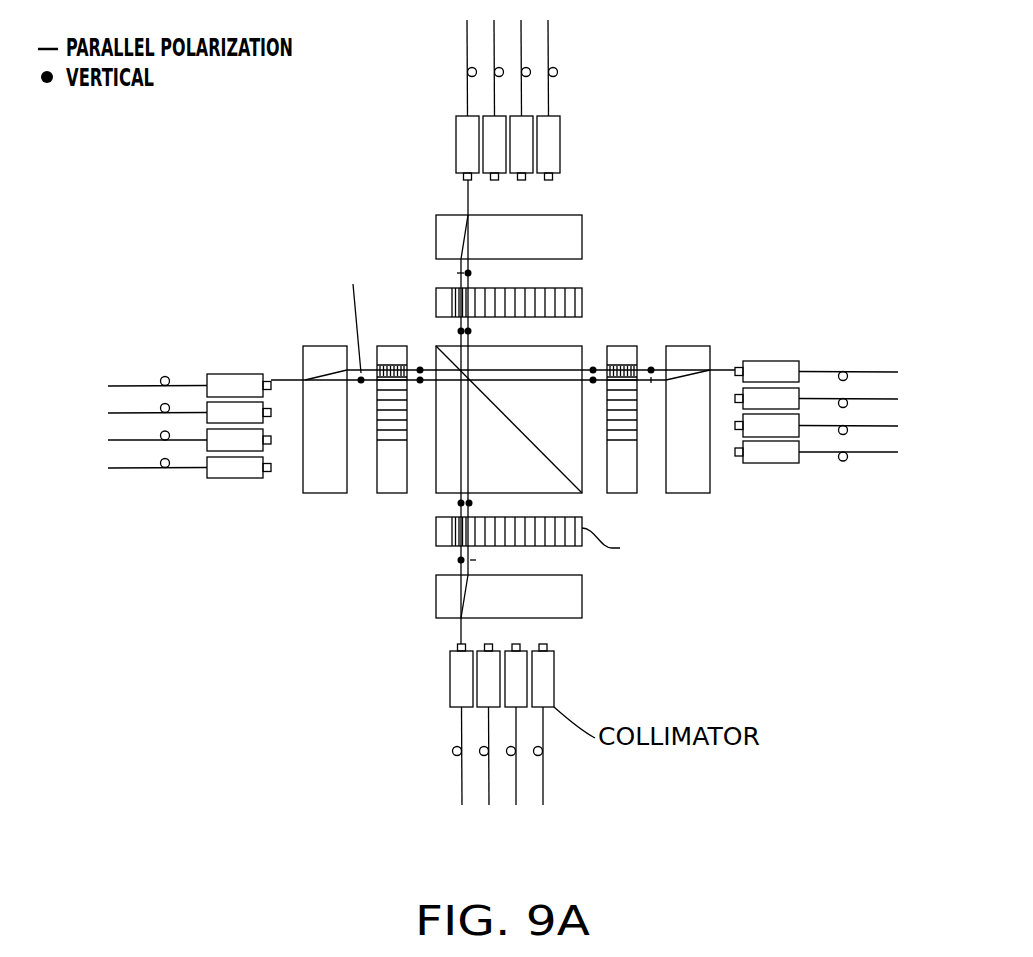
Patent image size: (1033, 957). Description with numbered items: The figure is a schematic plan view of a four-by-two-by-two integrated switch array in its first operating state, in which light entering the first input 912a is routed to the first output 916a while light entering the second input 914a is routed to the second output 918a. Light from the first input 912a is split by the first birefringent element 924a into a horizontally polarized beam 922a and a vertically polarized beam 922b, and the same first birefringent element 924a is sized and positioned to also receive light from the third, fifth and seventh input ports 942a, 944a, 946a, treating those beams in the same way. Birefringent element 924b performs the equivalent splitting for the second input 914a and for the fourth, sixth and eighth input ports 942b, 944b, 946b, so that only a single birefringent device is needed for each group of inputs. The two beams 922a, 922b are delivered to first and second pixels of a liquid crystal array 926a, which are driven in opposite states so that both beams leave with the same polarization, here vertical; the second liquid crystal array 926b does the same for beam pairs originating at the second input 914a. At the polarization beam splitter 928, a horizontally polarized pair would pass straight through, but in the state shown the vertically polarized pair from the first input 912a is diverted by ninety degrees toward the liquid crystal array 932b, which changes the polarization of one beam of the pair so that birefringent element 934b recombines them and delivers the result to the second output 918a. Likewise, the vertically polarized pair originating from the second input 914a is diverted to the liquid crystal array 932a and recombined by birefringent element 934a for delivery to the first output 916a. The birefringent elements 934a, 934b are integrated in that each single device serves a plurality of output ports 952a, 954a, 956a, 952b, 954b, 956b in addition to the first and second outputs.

The first input 912a is at (253, 373).
The second input 914a is at (455, 128).
The first output 916a is at (761, 361).
The second output 918a is at (451, 660).
The third input port 942a is at (235, 408).
The fifth input port 944a is at (223, 448).
The seventh input port 946a is at (240, 478).
The fourth input port 942b is at (483, 152).
The sixth input port 944b is at (533, 150).
The eighth input port 946b is at (561, 133).
The output port 952a is at (780, 385).
The output port 954a is at (758, 433).
The output port 956a is at (797, 462).
The output port 952b is at (477, 688).
The output port 954b is at (528, 683).
The output port 956b is at (554, 660).
The horizontally polarized beam 922a is at (368, 367).
The vertically polarized beam 922b is at (362, 314).
The first birefringent element 924a is at (317, 346).
The birefringent element 924b is at (582, 243).
The liquid crystal array 926a is at (390, 493).
The second liquid crystal array 926b is at (582, 297).
The polarization beam splitter 928 is at (570, 345).
The liquid crystal array 932a is at (628, 345).
The liquid crystal array 932b is at (436, 530).
The birefringent element 934a is at (681, 345).
The birefringent element 934b is at (436, 592).